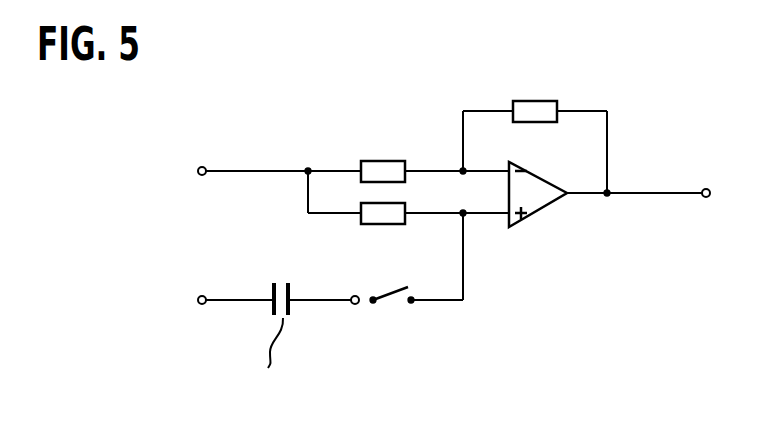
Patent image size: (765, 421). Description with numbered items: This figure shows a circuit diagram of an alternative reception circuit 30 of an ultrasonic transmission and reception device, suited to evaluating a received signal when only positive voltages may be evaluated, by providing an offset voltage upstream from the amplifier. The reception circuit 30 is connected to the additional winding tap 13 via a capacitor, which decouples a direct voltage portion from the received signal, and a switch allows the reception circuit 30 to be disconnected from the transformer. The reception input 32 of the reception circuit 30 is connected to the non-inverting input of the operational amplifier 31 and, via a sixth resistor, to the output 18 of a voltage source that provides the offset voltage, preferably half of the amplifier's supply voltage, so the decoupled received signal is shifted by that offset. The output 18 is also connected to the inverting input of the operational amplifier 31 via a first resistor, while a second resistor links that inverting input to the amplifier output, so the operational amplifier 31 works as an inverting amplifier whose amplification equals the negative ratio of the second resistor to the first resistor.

The additional winding tap 13 is at (198, 300).
The output of a voltage source 18 is at (198, 171).
The reception circuit 30 is at (598, 87).
The operational amplifier 31 is at (540, 211).
The reception input 32 is at (354, 305).